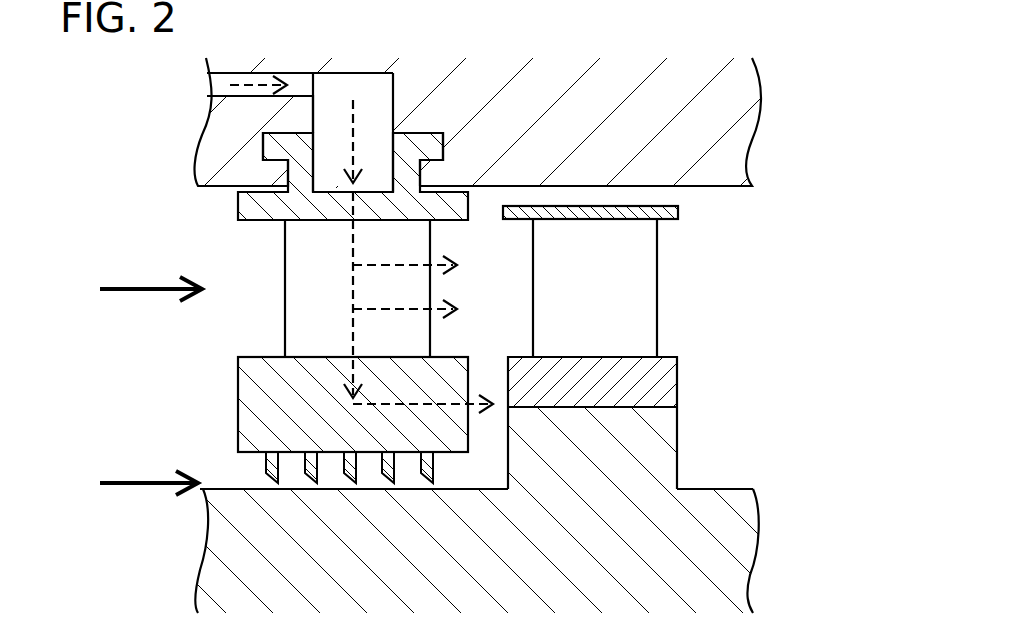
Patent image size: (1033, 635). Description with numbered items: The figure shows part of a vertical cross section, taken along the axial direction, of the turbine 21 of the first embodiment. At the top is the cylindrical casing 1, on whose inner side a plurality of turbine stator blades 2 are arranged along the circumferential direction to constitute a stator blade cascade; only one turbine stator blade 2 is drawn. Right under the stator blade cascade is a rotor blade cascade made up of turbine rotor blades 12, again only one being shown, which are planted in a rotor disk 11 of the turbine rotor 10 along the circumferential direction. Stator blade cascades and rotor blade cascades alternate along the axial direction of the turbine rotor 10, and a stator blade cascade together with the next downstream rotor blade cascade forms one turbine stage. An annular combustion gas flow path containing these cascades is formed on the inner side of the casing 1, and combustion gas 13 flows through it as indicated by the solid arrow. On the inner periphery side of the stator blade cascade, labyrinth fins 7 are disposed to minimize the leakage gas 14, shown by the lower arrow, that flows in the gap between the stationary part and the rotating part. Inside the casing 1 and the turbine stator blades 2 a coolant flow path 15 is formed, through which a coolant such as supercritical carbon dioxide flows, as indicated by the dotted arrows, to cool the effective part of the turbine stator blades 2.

The turbine 21 is at (792, 85).
The coolant flow path 15 is at (215, 84).
The casing 1 is at (208, 152).
The turbine stator blade 2 is at (305, 321).
The labyrinth fin 7 is at (266, 459).
The turbine rotor 10 is at (207, 572).
The rotor disk 11 is at (662, 458).
The turbine rotor blade 12 is at (633, 290).
The combustion gas 13 is at (148, 285).
The leakage gas 14 is at (130, 483).